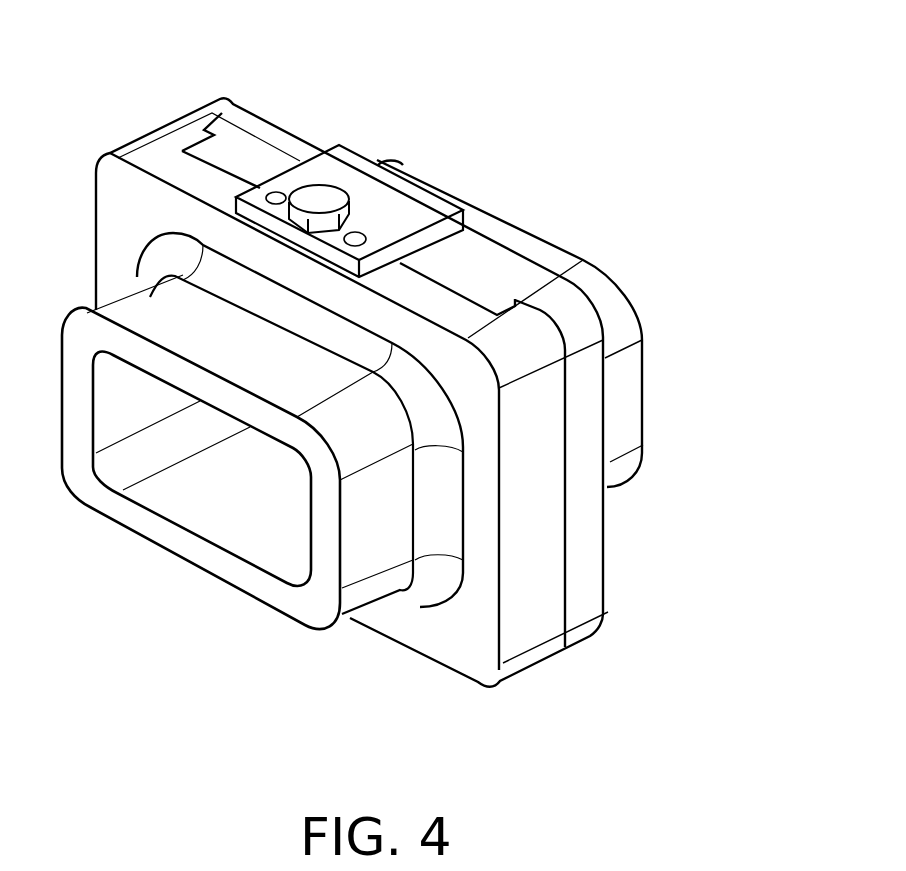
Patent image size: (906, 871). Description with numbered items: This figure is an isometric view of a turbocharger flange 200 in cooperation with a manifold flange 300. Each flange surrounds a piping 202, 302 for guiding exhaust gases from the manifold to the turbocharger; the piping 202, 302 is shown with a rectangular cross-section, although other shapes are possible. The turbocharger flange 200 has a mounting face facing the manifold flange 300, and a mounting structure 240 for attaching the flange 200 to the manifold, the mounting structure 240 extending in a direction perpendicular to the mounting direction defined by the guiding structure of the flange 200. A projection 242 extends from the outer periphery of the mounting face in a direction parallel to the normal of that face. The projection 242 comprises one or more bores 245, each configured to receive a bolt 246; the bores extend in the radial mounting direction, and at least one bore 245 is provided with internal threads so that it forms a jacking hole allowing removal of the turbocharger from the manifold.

The turbocharger flange 200 is at (565, 263).
The piping 202 is at (650, 325).
The mounting structure 240 is at (415, 214).
The projection 242 is at (264, 219).
The bore 245 is at (275, 194).
The bolt 246 is at (317, 202).
The manifold flange 300 is at (450, 652).
The piping 302 is at (248, 473).